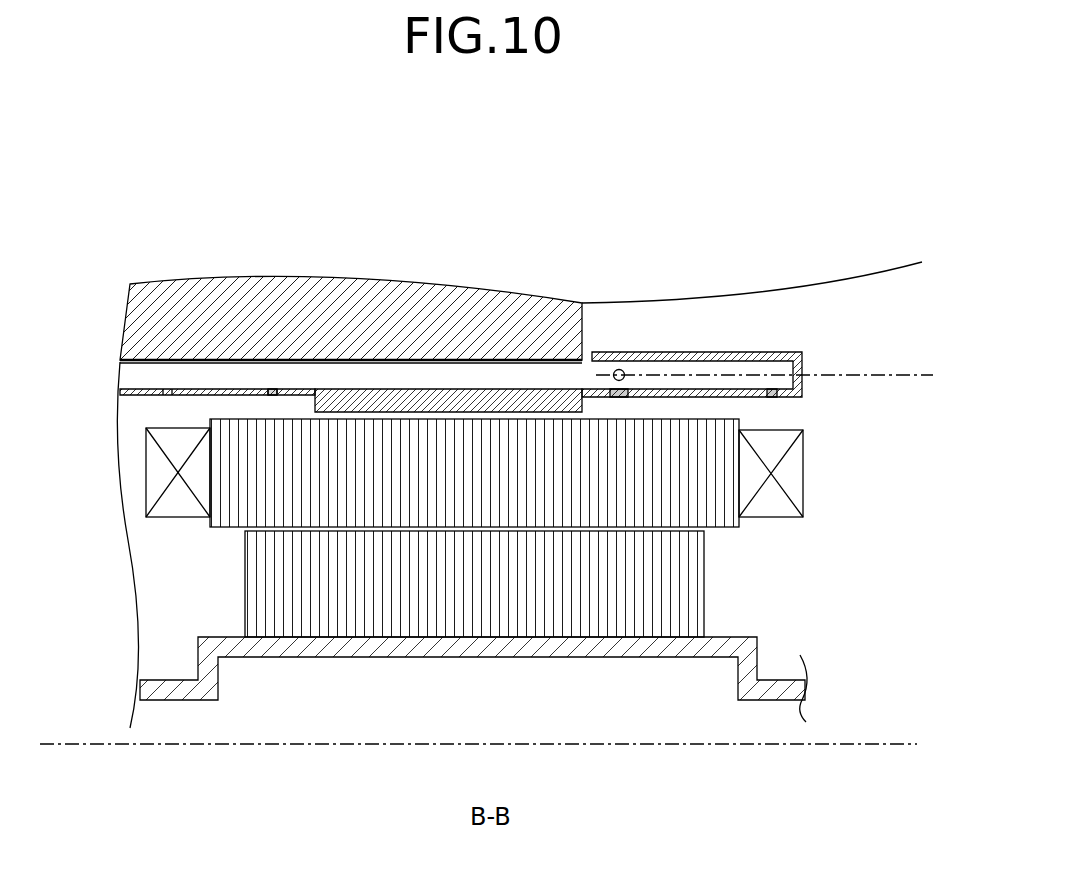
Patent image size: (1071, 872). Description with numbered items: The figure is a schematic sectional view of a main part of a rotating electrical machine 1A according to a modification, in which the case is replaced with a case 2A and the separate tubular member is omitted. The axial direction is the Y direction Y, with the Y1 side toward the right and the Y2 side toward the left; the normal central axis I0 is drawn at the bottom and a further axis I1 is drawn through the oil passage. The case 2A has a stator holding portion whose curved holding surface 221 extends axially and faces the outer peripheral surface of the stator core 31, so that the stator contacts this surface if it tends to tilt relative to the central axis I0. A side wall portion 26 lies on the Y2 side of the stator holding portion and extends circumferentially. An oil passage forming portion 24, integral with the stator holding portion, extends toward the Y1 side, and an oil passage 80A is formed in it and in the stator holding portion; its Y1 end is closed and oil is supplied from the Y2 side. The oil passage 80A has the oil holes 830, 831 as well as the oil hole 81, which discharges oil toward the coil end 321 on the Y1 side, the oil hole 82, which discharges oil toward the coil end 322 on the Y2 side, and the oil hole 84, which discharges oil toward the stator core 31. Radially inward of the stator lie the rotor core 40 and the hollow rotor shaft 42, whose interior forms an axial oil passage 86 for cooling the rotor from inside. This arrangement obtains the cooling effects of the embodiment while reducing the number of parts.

The rotating electrical machine 1A is at (782, 228).
The case 2A is at (408, 322).
The curved holding surface 221 is at (513, 412).
The oil passage forming portion 24 is at (720, 346).
The side wall portion 26 is at (135, 396).
The stator core 31 is at (643, 490).
The coil end 321 is at (804, 470).
The coil end 322 is at (172, 505).
The rotor core 40 is at (705, 580).
The rotor shaft 42 is at (550, 643).
The oil passage 80A is at (481, 389).
The oil hole 81 is at (770, 397).
The oil hole 82 is at (168, 389).
The oil hole 830 is at (610, 395).
The oil hole 831 is at (622, 369).
The oil hole 84 is at (272, 392).
The axial oil passage 86 is at (487, 699).
The central axis I0 is at (850, 746).
The reference axis I1 is at (860, 375).
The Y direction Y is at (614, 138).